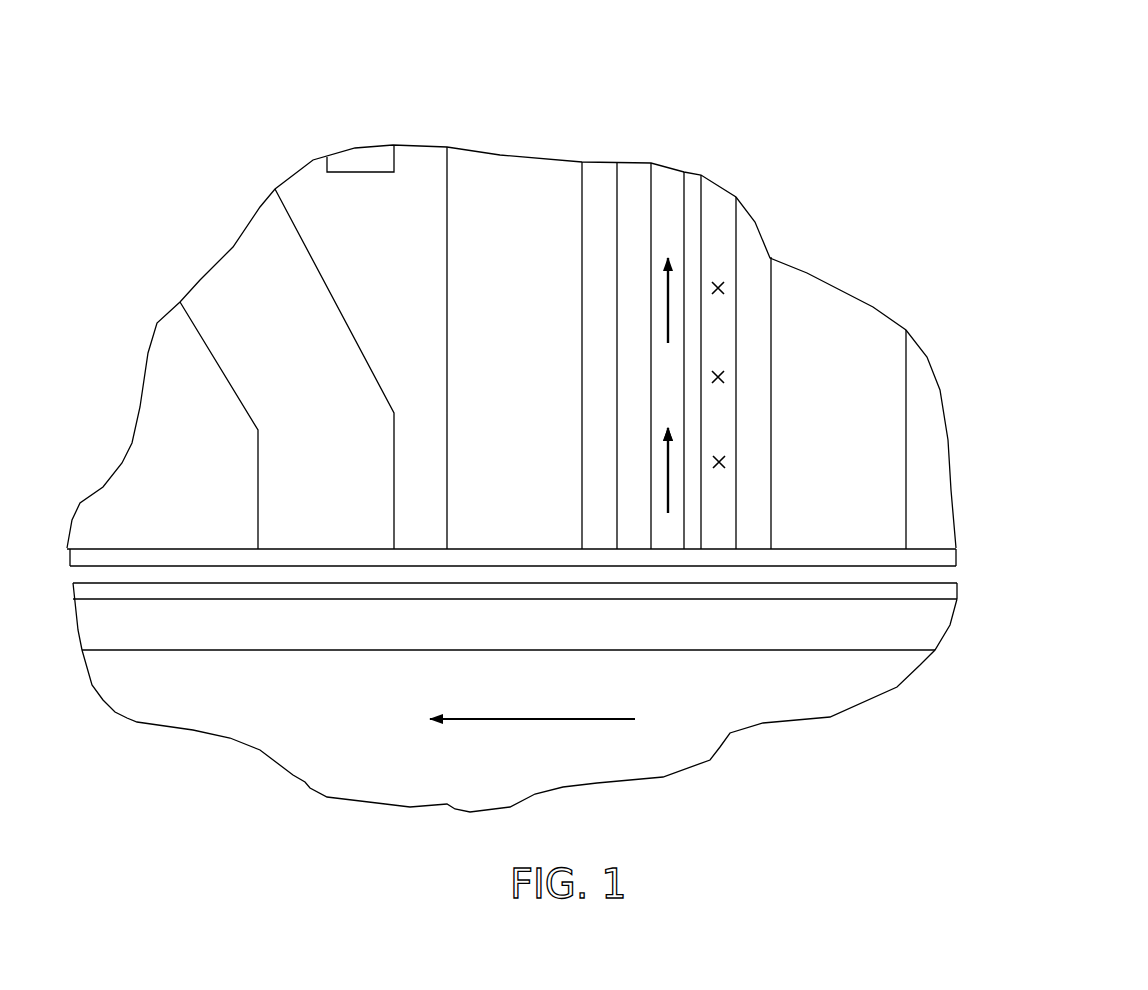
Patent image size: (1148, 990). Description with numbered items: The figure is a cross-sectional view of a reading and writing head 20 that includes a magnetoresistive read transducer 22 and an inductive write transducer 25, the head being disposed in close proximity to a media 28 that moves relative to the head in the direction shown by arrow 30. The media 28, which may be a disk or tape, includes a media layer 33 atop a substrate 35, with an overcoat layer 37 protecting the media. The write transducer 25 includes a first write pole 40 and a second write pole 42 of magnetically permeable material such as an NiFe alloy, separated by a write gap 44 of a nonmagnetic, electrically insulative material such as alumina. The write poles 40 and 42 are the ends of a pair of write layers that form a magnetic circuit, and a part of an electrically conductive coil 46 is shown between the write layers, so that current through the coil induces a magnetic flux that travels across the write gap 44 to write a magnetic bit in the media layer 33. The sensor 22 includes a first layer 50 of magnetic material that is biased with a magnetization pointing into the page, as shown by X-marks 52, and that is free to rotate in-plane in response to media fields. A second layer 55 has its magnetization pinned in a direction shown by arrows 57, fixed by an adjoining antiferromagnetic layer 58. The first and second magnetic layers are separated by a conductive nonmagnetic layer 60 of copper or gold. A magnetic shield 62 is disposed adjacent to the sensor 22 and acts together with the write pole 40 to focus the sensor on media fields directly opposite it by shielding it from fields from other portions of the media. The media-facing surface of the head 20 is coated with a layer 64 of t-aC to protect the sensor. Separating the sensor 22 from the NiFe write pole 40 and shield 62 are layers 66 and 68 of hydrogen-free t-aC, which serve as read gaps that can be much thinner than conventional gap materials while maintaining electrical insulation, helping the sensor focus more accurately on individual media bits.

The head 20 is at (422, 94).
The magnetoresistive read transducer 22 is at (694, 566).
The inductive write transducer 25 is at (417, 566).
The media 28 is at (275, 812).
The arrow 30 is at (515, 722).
The media layer 33 is at (547, 651).
The substrate 35 is at (327, 691).
The overcoat layer 37 is at (235, 600).
The first write pole 40 is at (447, 480).
The second write pole 42 is at (260, 445).
The write gap 44 is at (443, 513).
The electrically conductive coil 46 is at (360, 173).
The first layer 50 is at (736, 420).
The X-marks 52 is at (724, 378).
The second layer 55 is at (651, 225).
The arrows 57 is at (668, 293).
The antiferromagnetic layer 58 is at (617, 455).
The conductive nonmagnetic layer 60 is at (700, 338).
The magnetic shield 62 is at (864, 439).
The layer of t-aC 64 is at (155, 548).
The t-aC layer 66 is at (582, 378).
The t-aC layer 68 is at (770, 477).